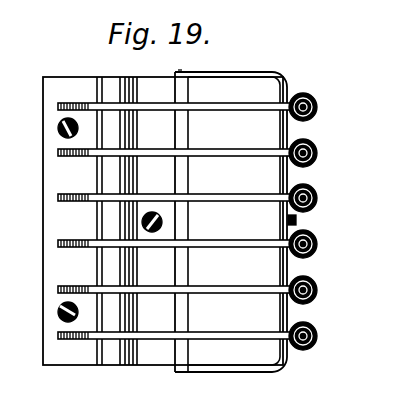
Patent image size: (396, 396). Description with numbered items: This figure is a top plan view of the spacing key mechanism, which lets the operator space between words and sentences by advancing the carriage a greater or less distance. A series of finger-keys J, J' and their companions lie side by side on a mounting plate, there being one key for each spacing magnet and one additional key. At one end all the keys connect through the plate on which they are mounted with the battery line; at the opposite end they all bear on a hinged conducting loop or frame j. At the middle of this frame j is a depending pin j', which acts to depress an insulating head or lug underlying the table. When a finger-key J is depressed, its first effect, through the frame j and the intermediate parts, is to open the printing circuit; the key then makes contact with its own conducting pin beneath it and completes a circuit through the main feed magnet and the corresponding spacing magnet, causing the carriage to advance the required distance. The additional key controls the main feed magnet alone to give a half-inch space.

The finger-key J is at (187, 332).
The finger-key J' is at (187, 286).
The hinged conducting loop or frame j is at (253, 221).
The depending pin j' is at (311, 221).